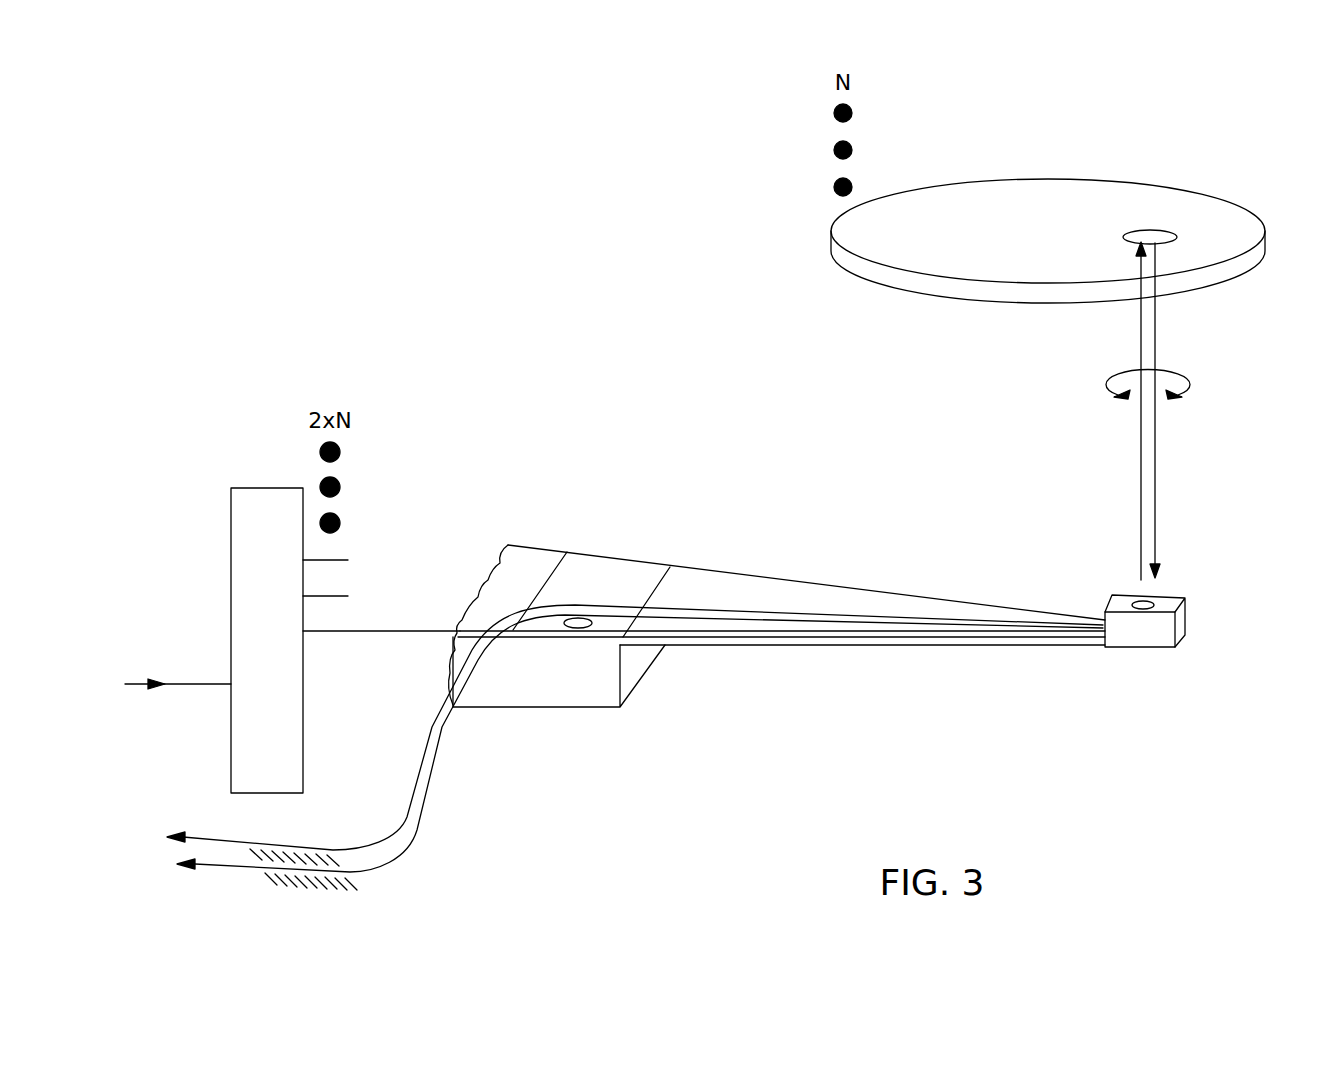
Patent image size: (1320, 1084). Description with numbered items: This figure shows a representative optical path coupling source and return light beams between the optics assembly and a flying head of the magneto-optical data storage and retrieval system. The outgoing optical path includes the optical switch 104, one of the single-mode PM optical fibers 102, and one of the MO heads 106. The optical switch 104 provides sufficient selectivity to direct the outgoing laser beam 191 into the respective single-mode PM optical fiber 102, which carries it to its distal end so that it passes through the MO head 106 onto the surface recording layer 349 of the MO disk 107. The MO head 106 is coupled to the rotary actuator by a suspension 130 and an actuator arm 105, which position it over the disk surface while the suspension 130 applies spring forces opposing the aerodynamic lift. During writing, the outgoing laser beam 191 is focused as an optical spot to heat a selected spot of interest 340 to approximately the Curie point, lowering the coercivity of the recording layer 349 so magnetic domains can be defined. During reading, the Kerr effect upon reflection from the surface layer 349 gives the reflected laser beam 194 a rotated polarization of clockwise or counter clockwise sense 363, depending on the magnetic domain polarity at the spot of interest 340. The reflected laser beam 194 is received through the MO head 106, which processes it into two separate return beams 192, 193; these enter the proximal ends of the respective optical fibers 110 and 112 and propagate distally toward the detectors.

The single-mode PM optical fiber 102 is at (400, 628).
The optical switch 104 is at (257, 488).
The actuator arm 105 is at (552, 708).
The flying MO head 106 is at (1143, 648).
The MO disk 107 is at (852, 268).
The optical fiber 110 is at (262, 848).
The optical fiber 112 is at (255, 872).
The suspension 130 is at (780, 645).
The outgoing laser beam 191 is at (1140, 442).
The return beam 192 is at (149, 828).
The return beam 193 is at (160, 868).
The reflected laser beam 194 is at (1157, 503).
The spot of interest 340 is at (1167, 240).
The surface recording layer 349 is at (1035, 192).
The clockwise or counter clockwise sense 363 is at (1180, 373).